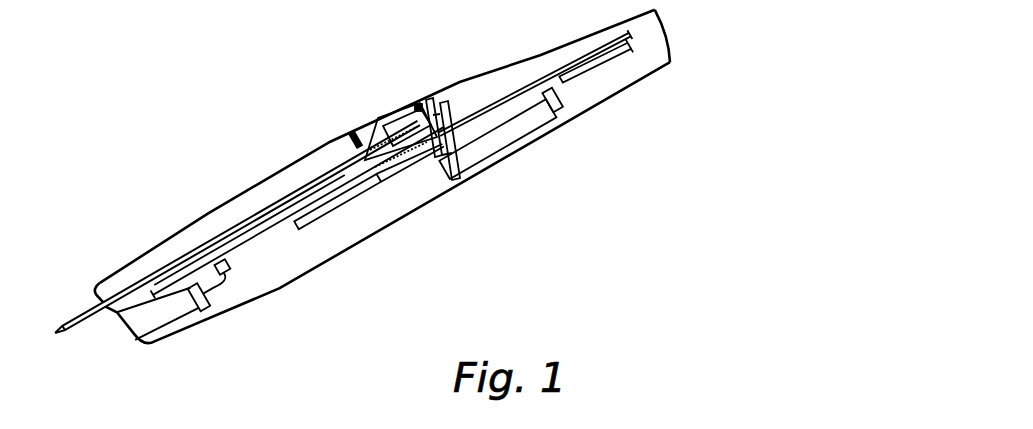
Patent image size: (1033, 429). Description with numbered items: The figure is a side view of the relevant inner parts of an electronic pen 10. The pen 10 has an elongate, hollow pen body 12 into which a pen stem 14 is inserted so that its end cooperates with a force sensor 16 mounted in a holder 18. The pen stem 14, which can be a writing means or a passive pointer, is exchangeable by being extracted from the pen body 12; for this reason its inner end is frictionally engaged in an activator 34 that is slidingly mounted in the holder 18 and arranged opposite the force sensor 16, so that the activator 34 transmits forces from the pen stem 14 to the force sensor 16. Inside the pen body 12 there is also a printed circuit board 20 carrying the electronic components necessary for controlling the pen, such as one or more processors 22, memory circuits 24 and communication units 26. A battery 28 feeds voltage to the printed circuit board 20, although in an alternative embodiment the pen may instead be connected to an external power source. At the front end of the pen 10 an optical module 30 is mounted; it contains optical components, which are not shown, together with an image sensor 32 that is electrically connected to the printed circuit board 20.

The pen 10 is at (305, 151).
The pen body 12 is at (410, 214).
The pen stem 14 is at (92, 325).
The force sensor 16 is at (427, 100).
The holder 18 is at (377, 117).
The printed circuit board 20 is at (520, 96).
The processors 22 is at (343, 202).
The memory circuits 24 is at (381, 177).
The communication units 26 is at (613, 66).
The battery 28 is at (525, 127).
The optical module 30 is at (163, 338).
The image sensor 32 is at (203, 312).
The activator 34 is at (416, 104).